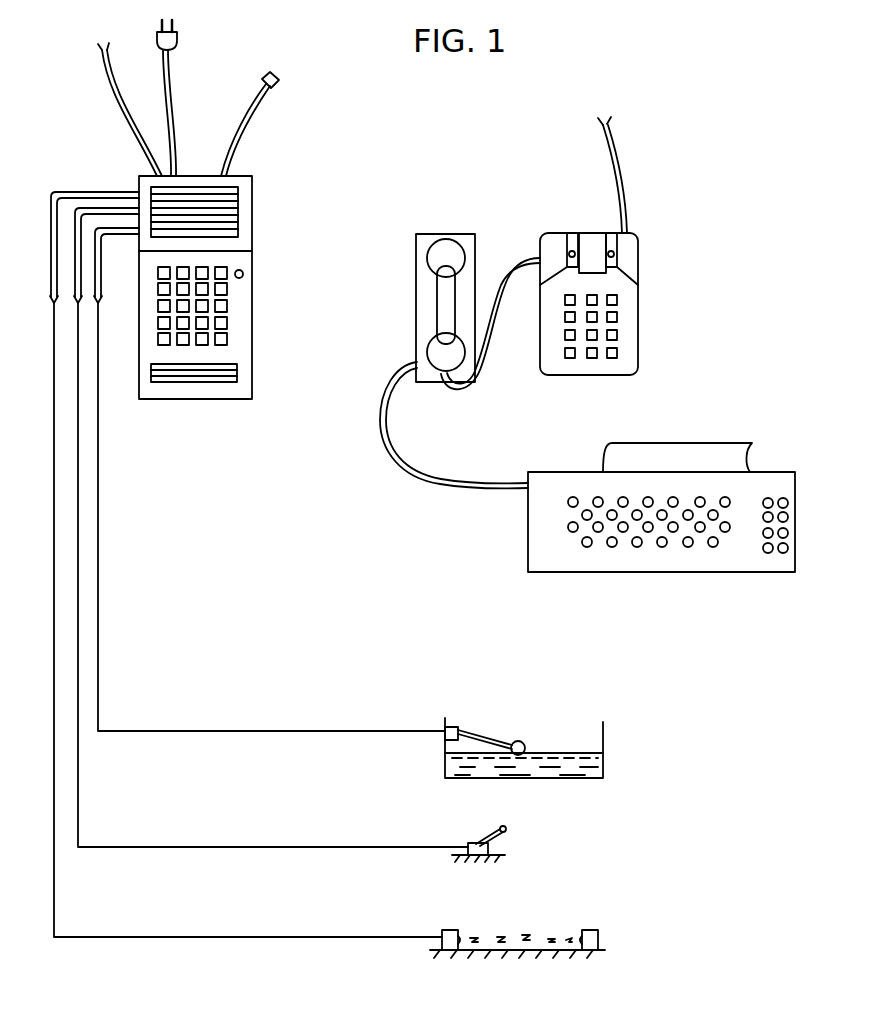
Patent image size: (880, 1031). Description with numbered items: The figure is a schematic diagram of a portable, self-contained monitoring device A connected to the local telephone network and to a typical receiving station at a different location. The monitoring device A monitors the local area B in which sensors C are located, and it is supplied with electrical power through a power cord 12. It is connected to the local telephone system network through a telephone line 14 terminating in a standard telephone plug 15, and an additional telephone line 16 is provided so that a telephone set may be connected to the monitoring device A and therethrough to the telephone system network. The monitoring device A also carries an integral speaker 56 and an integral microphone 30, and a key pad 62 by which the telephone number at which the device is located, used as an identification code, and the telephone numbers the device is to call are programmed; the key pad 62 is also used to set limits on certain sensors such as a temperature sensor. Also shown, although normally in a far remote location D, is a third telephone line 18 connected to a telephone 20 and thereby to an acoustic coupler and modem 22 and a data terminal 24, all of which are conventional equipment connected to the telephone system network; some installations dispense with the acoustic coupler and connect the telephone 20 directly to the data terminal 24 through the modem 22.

The power cord 12 is at (173, 103).
The telephone line 14 is at (257, 110).
The standard telephone plug 15 is at (279, 80).
The additional telephone line 16 is at (120, 100).
The third telephone line 18 is at (616, 172).
The telephone 20 is at (628, 315).
The acoustic coupler and modem 22 is at (422, 298).
The data terminal 24 is at (533, 528).
The integral microphone 30 is at (237, 372).
The integral speaker 56 is at (238, 213).
The key pad 62 is at (226, 313).
The monitoring device A is at (258, 266).
The local area B is at (637, 859).
The sensors C is at (525, 720).
The far remote location D is at (540, 208).